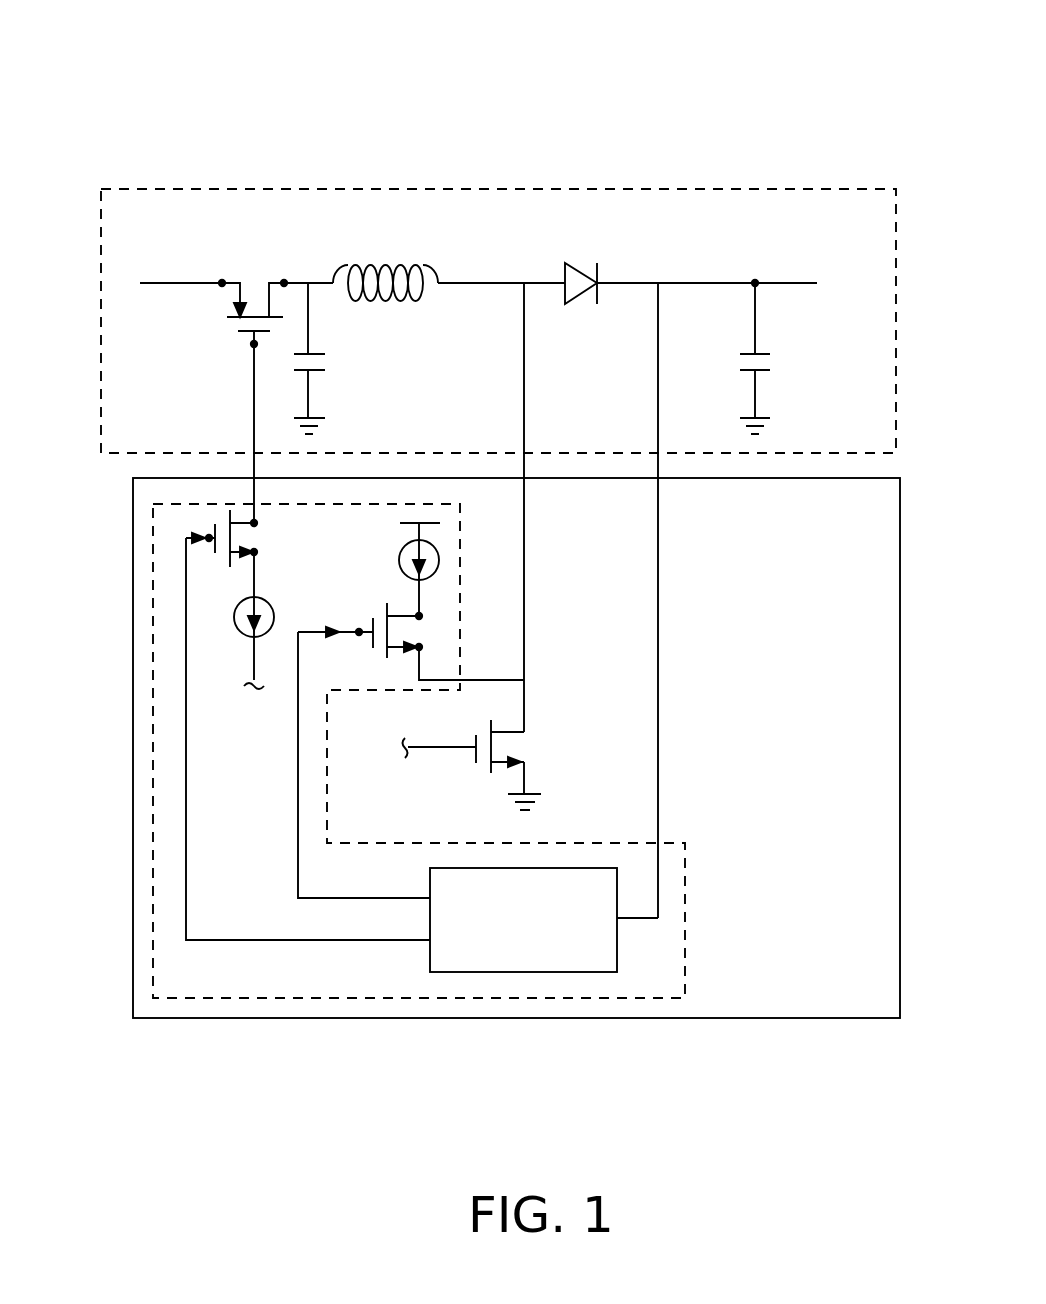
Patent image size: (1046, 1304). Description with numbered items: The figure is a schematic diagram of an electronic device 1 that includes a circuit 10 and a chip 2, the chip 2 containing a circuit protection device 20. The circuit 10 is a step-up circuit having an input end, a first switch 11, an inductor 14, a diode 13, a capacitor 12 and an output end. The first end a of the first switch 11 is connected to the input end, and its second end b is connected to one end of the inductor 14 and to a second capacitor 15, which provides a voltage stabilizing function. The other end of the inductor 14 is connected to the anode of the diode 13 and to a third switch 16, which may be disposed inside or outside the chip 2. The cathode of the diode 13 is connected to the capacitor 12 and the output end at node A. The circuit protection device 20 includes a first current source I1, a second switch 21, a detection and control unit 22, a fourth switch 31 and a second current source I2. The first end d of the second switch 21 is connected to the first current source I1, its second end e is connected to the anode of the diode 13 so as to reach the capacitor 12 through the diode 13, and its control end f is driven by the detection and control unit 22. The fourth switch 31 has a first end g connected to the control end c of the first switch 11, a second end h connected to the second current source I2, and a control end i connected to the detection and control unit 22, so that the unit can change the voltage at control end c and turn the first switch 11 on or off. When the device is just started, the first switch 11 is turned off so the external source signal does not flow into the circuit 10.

The electronic device 1 is at (461, 42).
The circuit 10 is at (483, 188).
The first switch 11 is at (256, 278).
The capacitor 12 is at (778, 362).
The diode 13 is at (584, 263).
The inductor 14 is at (386, 262).
The second capacitor 15 is at (332, 362).
The third switch 16 is at (481, 768).
The chip 2 is at (515, 1018).
The circuit protection device 20 is at (685, 945).
The second switch 21 is at (374, 606).
The detection and control unit 22 is at (523, 920).
The fourth switch 31 is at (258, 540).
The first current source I1 is at (400, 560).
The second current source I2 is at (240, 636).